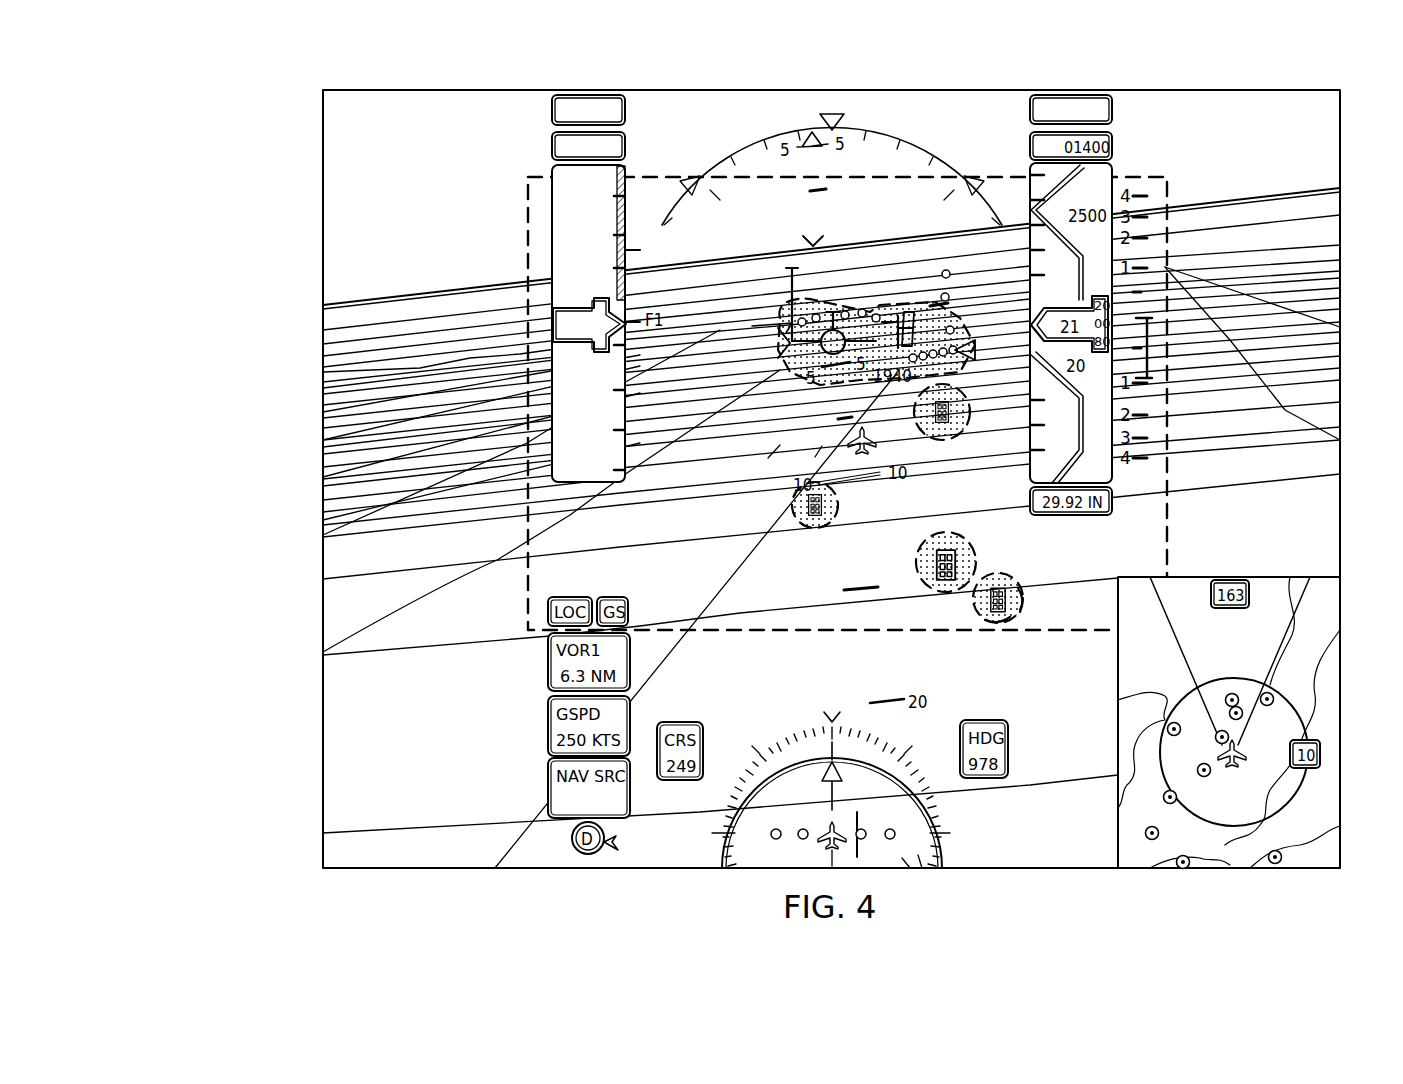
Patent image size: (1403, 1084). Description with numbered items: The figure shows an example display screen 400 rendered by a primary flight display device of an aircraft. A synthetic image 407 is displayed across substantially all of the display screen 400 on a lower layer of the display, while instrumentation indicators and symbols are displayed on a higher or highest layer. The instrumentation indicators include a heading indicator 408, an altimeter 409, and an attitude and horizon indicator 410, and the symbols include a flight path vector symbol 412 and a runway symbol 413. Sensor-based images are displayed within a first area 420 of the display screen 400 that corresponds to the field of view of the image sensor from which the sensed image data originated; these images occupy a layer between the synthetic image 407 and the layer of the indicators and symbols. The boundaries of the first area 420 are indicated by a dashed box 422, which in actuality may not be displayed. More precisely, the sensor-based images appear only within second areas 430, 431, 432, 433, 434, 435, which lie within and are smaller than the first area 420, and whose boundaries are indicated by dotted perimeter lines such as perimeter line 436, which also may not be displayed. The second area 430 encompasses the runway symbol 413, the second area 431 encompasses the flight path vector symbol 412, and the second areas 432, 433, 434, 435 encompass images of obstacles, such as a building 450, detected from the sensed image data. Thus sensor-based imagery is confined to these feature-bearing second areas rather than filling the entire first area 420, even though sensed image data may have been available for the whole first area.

The display screen 400 is at (290, 195).
The synthetic image 407 is at (325, 752).
The heading indicator 408 is at (917, 840).
The altimeter 409 is at (556, 232).
The attitude and horizon indicator 410 is at (1222, 196).
The flight path vector symbol 412 is at (813, 357).
The runway symbol 413 is at (908, 310).
The first area 420 is at (545, 530).
The dashed box 422 is at (527, 592).
The second area 430 is at (882, 336).
The second area 431 is at (808, 330).
The second area 432 is at (960, 426).
The second area 433 is at (822, 526).
The second area 434 is at (940, 530).
The second area 435 is at (1004, 582).
The perimeter line 436 is at (1022, 603).
The building 450 is at (1000, 622).